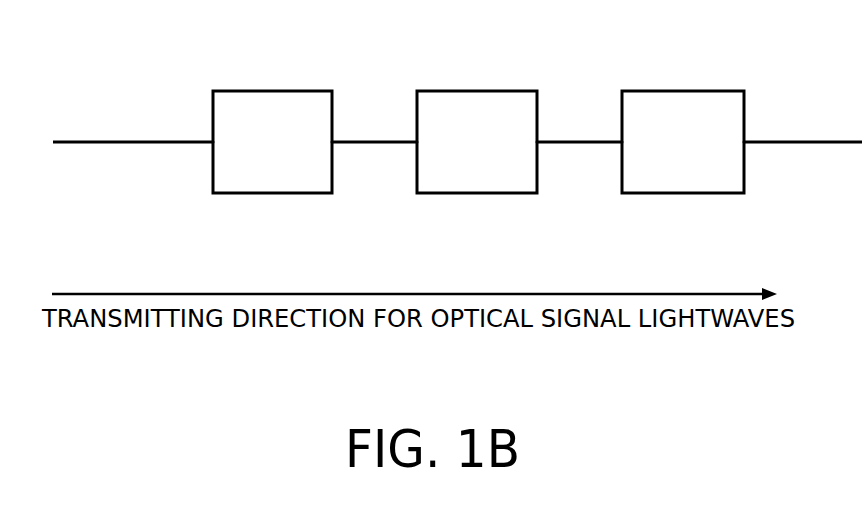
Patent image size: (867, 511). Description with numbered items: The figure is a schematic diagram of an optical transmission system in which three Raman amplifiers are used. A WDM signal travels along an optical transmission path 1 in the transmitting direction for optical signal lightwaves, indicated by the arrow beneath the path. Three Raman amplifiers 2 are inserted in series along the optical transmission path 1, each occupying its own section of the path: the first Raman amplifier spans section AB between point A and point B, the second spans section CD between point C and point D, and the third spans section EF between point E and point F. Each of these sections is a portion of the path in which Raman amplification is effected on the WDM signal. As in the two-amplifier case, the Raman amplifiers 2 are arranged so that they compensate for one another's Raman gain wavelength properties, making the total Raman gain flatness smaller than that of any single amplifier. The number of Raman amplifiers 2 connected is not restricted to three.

The optical transmission path 1 is at (158, 140).
The Raman amplifiers 2 is at (268, 90).
The point A is at (213, 150).
The point B is at (333, 150).
The point C is at (417, 150).
The point D is at (538, 150).
The point E is at (622, 150).
The point F is at (747, 150).